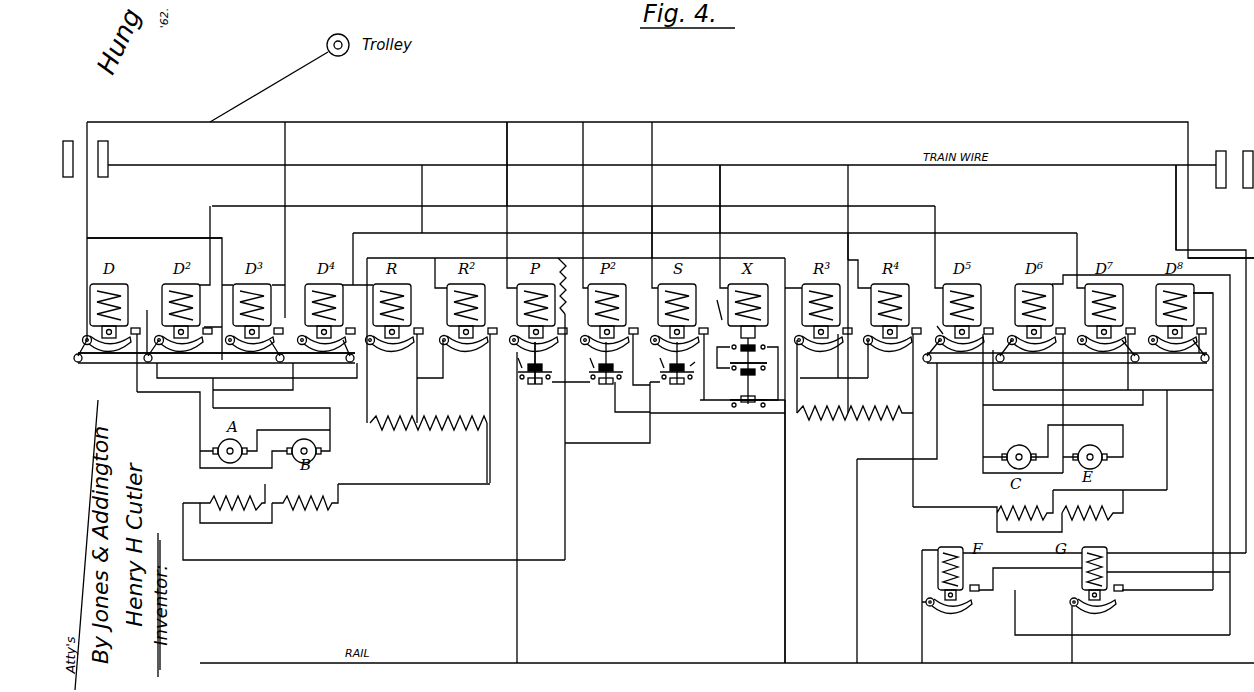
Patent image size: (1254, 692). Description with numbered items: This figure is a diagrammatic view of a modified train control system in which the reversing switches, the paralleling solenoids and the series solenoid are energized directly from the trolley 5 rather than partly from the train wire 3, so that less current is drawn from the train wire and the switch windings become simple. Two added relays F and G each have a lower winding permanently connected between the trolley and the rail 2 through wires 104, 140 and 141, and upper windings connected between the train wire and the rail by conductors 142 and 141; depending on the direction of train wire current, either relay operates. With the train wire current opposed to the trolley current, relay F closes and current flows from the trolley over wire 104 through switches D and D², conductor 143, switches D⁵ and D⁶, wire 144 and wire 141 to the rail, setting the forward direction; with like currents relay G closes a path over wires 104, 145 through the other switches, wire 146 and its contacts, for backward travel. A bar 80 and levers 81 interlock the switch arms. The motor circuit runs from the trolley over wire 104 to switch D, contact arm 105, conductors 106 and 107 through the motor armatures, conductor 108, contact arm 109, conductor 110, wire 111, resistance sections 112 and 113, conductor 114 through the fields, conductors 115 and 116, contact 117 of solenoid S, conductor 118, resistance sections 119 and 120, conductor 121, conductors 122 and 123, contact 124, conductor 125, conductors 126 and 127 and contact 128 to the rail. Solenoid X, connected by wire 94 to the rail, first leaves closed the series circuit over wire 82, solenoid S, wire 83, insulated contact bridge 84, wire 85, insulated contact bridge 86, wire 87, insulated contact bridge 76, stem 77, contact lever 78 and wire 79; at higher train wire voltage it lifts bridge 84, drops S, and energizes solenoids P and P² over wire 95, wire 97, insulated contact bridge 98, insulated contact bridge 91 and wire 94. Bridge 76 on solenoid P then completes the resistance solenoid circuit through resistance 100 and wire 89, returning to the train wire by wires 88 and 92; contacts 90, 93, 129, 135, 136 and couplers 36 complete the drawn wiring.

The rail 2 is at (642, 662).
The train wire 3 is at (344, 162).
The trolley 5 is at (290, 87).
The train line coupler contacts 36 is at (67, 140).
The insulated contact bridge 76 is at (537, 380).
The stem 77 is at (708, 382).
The contact lever 78 is at (490, 336).
The conductor 79 is at (518, 492).
The bar 80 is at (92, 363).
The levers 81 is at (1199, 364).
The wire 82 is at (655, 226).
The wire 83 is at (702, 400).
The insulated contact bridge 84 is at (762, 398).
The wire 85 is at (686, 414).
The insulated contact bridge 86 is at (615, 384).
The wire 87 is at (576, 384).
The wire 88 is at (424, 222).
The wire 89 is at (545, 258).
The conductor 90 is at (564, 318).
The insulated contact bridge 91 is at (752, 364).
The wire 92 is at (850, 207).
The conductor 93 is at (722, 226).
The wire 94 is at (784, 440).
The wire 95 is at (508, 194).
The wire 97 is at (528, 360).
The insulated contact bridge 98 is at (658, 369).
The resistance 100 is at (560, 275).
The wire 104 is at (553, 120).
The contact arm 105 is at (137, 360).
The conductor 106 is at (137, 394).
The conductor 107 is at (200, 432).
The conductor 108 is at (228, 410).
The contact arm 109 is at (257, 371).
The conductor 110 is at (322, 380).
The wire 111 is at (367, 403).
The resistance section 112 is at (400, 423).
The resistance section 113 is at (464, 423).
The conductor 114 is at (470, 486).
The conductor 115 is at (566, 508).
The conductor 116 is at (632, 444).
The contact 117 is at (444, 442).
The conductor 118 is at (798, 395).
The resistance section 119 is at (825, 420).
The resistance section 120 is at (878, 420).
The conductor 121 is at (922, 477).
The conductor 122 is at (1168, 438).
The conductor 123 is at (1097, 386).
The contact 124 is at (1050, 352).
The conductor 125 is at (1060, 396).
The conductor 126 is at (938, 430).
The conductor 127 is at (985, 384).
The contact 128 is at (940, 338).
The conductor 129 is at (858, 498).
The conductor 135 is at (230, 364).
The conductor 136 is at (320, 364).
The wire 140 is at (1244, 257).
The wire 141 is at (921, 612).
The conductor 142 is at (1176, 204).
The conductor 143 is at (775, 207).
The wire 144 is at (1218, 284).
The wire 145 is at (155, 237).
The wire 146 is at (805, 248).